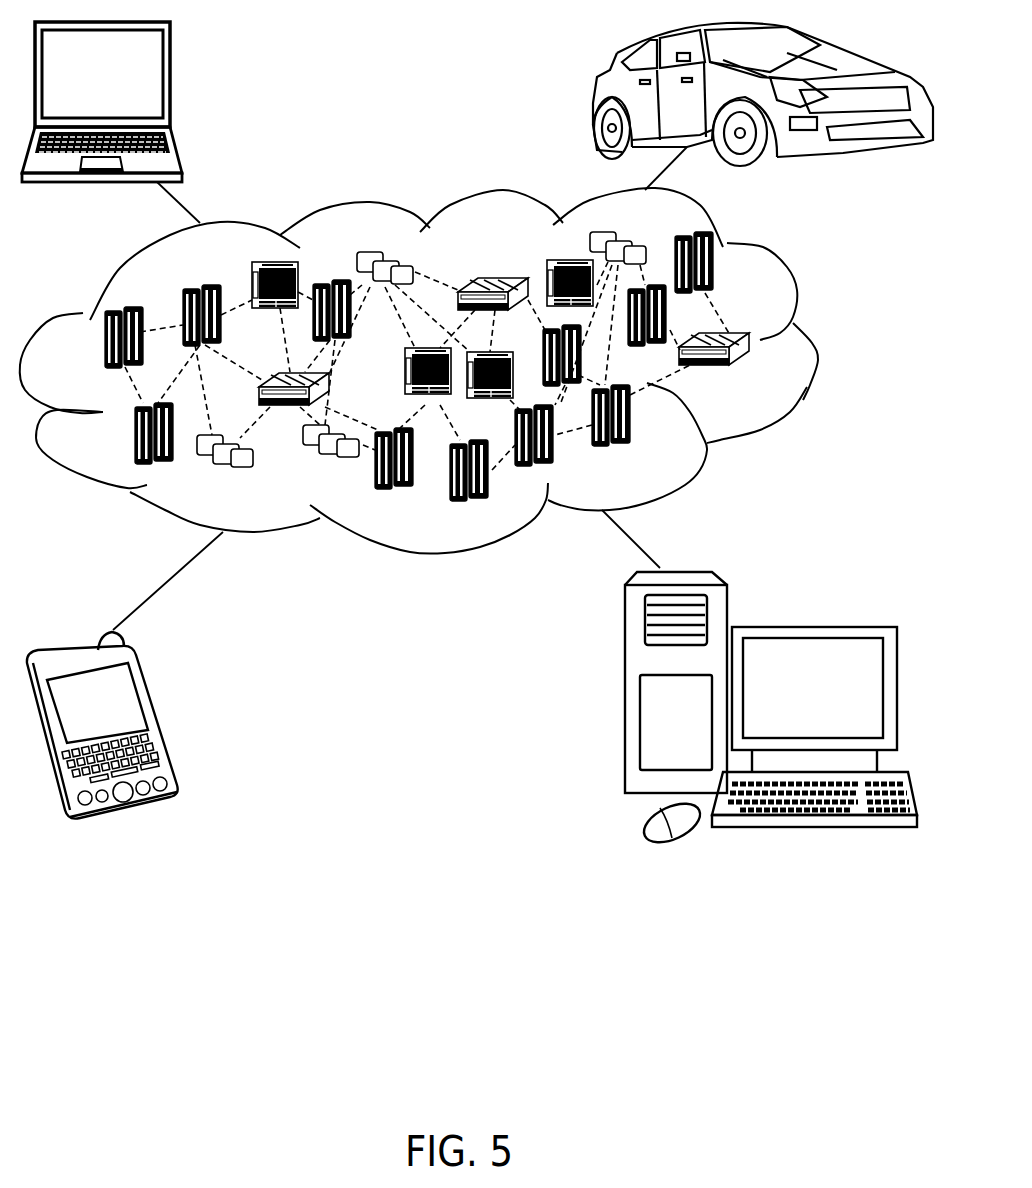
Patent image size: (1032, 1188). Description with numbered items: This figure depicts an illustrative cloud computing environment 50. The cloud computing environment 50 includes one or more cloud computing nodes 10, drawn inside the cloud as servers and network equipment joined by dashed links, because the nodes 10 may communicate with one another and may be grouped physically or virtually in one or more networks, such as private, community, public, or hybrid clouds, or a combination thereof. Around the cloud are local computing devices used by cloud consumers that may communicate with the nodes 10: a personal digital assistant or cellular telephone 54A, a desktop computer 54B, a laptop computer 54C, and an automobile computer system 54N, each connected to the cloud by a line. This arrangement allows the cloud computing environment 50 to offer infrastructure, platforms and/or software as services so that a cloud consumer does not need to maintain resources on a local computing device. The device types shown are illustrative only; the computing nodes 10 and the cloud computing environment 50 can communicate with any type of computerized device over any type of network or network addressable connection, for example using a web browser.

The cloud computing nodes 10 is at (760, 378).
The cloud computing environment 50 is at (815, 347).
The personal digital assistant (PDA) or cellular telephone 54A is at (158, 720).
The desktop computer 54B is at (810, 627).
The laptop computer 54C is at (170, 80).
The automobile computer system 54N is at (598, 98).